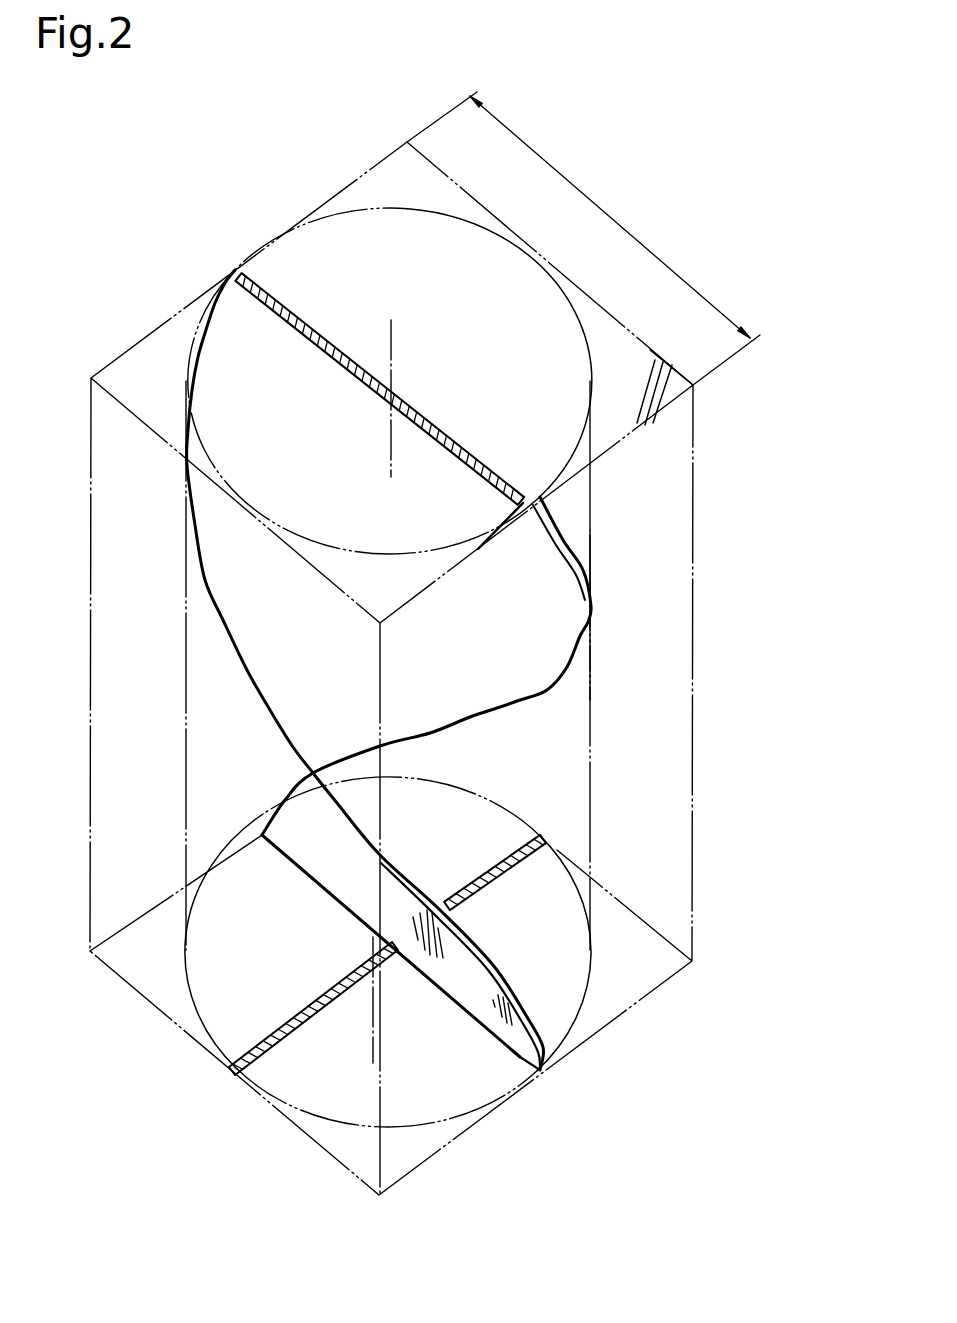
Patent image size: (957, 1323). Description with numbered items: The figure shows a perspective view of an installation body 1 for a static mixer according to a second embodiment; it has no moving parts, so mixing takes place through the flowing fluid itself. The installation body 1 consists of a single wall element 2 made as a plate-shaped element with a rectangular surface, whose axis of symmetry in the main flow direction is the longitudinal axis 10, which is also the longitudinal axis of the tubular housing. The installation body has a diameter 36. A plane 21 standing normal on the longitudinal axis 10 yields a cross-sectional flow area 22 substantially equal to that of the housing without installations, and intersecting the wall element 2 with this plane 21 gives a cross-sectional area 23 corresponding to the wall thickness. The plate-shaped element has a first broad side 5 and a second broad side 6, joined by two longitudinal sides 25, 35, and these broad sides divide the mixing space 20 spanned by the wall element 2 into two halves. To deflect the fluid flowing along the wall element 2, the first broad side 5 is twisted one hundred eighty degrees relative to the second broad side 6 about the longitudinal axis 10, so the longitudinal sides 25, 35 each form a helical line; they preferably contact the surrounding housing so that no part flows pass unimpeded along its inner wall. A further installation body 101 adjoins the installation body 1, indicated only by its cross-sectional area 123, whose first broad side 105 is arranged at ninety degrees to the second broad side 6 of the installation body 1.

The installation body 1 is at (311, 255).
The wall element 2 is at (557, 629).
The first broad side 5 is at (523, 503).
The second broad side 6 is at (523, 1060).
The longitudinal axis 10 is at (391, 343).
The mixing space 20 is at (565, 367).
The plane 21 is at (668, 387).
The cross-sectional flow area 22 is at (557, 454).
The cross-sectional area 23 is at (300, 313).
The longitudinal side 25 is at (223, 620).
The longitudinal side 35 is at (520, 700).
The diameter 36 is at (593, 202).
The further installation body 101 is at (258, 1079).
The first broad side 105 is at (277, 1037).
The cross-sectional area 123 is at (540, 850).